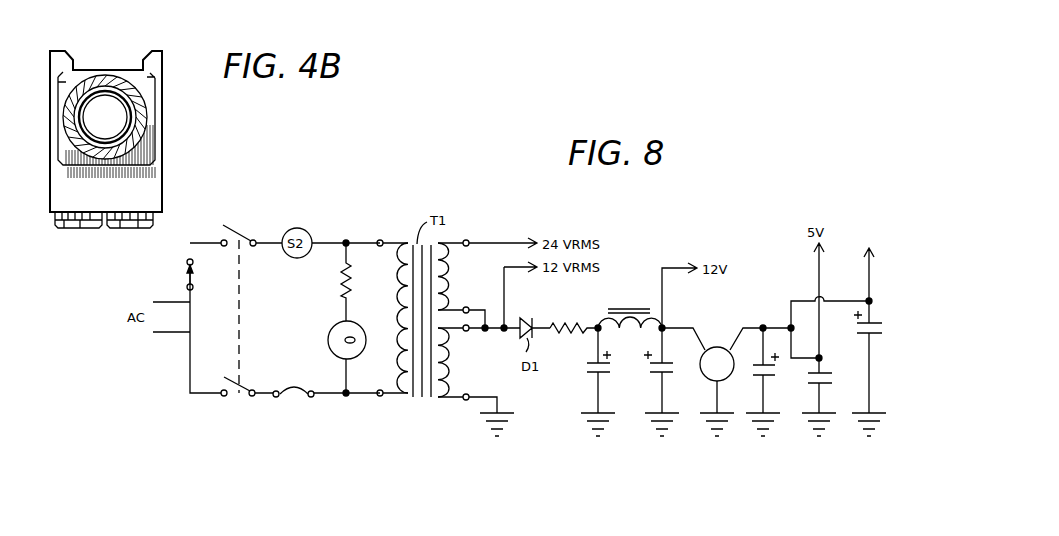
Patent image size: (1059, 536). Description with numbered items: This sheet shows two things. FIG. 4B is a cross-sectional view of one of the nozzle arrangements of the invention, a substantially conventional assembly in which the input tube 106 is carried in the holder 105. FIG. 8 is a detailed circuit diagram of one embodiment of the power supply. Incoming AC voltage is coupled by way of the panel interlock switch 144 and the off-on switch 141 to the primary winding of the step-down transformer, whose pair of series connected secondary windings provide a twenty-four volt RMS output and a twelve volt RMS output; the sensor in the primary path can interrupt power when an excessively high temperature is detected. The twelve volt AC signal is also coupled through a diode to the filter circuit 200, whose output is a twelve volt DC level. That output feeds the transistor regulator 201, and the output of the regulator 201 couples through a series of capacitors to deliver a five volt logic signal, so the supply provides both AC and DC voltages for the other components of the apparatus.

In FIG. 4B, the holder 105 is at (140, 187).
In FIG. 4B, the input tube 106 is at (138, 108).
In FIG. 8, the panel interlock switch 144 is at (187, 278).
In FIG. 8, the off-on switch 141 is at (240, 312).
In FIG. 8, the filter circuit 200 is at (648, 397).
In FIG. 8, the transistor regulator 201 is at (718, 356).